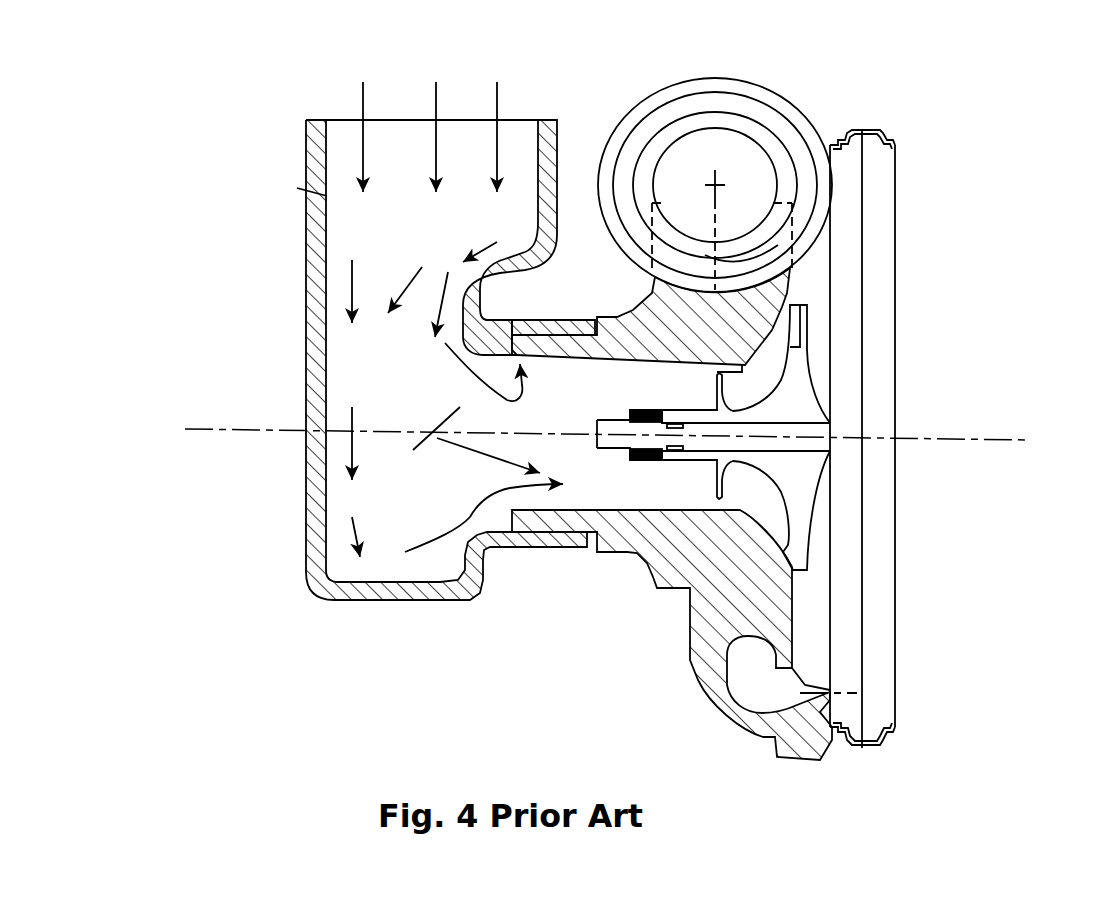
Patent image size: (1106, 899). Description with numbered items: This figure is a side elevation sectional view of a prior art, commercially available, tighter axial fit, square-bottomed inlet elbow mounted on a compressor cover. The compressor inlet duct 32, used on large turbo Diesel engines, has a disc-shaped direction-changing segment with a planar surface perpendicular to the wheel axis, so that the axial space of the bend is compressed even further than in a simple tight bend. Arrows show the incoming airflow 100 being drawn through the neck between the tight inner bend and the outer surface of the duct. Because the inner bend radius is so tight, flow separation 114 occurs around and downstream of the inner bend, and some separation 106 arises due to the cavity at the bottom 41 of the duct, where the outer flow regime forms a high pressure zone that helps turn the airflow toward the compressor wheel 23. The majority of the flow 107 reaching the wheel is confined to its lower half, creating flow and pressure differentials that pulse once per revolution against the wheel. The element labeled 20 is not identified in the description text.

The compressor housing 20 is at (727, 600).
The compressor wheel 23 is at (800, 412).
The compressor inlet duct 32 is at (315, 450).
The bottom of the duct 41 is at (412, 570).
The incoming airflow 100 is at (448, 72).
The separation 106 is at (425, 540).
The majority of the flow 107 is at (566, 451).
The flow separation 114 is at (523, 372).